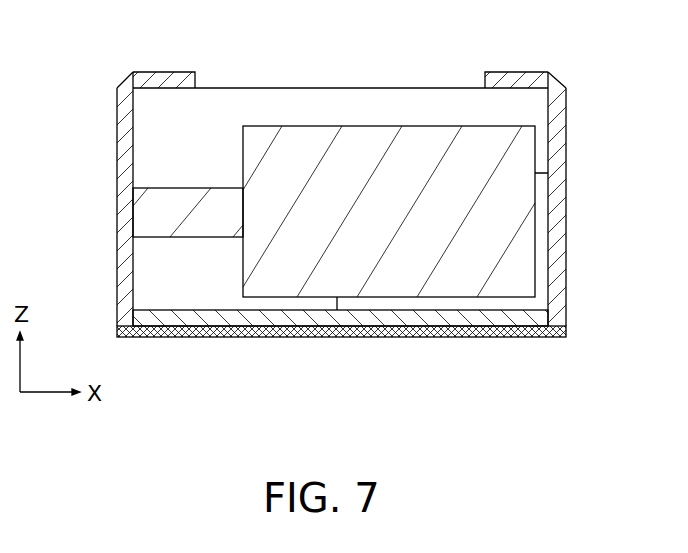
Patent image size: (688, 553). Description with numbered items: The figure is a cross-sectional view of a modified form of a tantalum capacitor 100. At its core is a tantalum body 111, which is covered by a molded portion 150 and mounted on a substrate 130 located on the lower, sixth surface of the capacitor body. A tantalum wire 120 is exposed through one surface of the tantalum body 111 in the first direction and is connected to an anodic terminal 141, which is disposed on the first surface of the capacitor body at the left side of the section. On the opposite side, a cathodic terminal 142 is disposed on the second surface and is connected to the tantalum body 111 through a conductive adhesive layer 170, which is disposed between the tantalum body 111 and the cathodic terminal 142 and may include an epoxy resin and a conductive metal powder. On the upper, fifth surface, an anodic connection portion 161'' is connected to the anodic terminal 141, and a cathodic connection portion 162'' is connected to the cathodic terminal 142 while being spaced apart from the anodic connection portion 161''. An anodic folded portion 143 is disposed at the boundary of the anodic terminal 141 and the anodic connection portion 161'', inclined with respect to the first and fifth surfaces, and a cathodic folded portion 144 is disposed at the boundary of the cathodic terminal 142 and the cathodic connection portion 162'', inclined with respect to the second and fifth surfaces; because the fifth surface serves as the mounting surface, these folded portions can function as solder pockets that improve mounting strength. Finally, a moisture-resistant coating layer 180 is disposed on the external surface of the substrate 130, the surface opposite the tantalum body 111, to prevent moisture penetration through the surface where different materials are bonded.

The tantalum capacitor 100 is at (362, 22).
The tantalum body 111 is at (431, 145).
The tantalum wire 120 is at (210, 192).
The substrate 130 is at (333, 336).
The anodic terminal 141 is at (116, 215).
The cathodic terminal 142 is at (553, 211).
The anodic folded portion 143 is at (121, 86).
The cathodic folded portion 144 is at (560, 86).
The molded portion 150 is at (377, 100).
The anodic connection portion 161'' is at (159, 60).
The cathodic connection portion 162'' is at (521, 60).
The conductive adhesive layer 170 is at (545, 253).
The moisture-resistant coating layer 180 is at (428, 339).